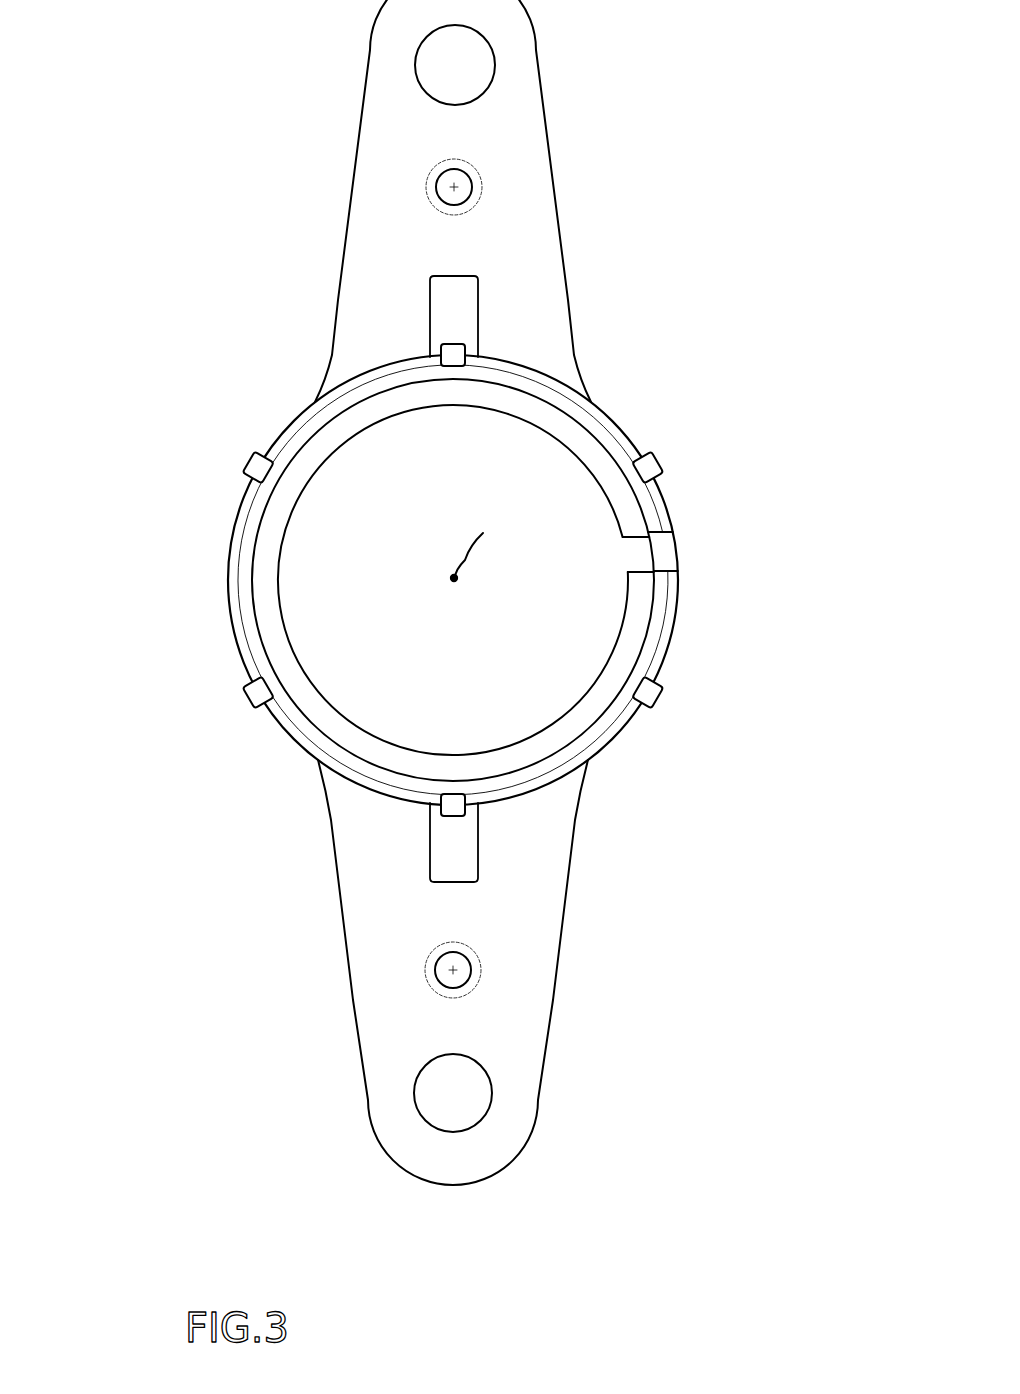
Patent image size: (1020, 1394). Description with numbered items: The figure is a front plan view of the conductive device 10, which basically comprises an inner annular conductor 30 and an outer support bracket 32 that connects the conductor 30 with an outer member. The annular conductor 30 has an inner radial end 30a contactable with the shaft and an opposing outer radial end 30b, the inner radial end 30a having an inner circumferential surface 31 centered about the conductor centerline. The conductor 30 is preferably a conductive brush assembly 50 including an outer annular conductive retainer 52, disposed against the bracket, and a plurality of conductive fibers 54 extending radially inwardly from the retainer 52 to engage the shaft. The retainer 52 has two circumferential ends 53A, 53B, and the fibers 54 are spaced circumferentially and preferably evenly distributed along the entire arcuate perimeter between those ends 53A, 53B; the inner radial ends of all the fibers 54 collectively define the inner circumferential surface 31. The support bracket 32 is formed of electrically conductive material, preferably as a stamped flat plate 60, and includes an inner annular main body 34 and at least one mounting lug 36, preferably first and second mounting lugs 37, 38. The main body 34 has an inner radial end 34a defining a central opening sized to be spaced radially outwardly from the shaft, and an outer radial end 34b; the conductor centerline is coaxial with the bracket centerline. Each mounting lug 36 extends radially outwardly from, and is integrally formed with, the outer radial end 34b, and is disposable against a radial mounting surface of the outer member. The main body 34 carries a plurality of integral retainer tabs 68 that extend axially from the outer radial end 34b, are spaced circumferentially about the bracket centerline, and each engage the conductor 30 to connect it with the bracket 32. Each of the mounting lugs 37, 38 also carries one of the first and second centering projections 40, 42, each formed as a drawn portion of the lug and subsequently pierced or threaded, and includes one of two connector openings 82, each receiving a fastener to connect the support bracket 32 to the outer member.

The conductive device 10 is at (170, 270).
The inner annular conductor 30 is at (695, 607).
The inner radial end 30a is at (288, 530).
The outer radial end 30b is at (235, 523).
The inner circumferential surface 31 is at (360, 437).
The support bracket 32 is at (597, 335).
The annular main body 34 is at (690, 553).
The inner radial end 34a is at (653, 548).
The outer radial end 34b is at (680, 546).
The mounting lug 36 is at (572, 230).
The first mounting lug 37 is at (540, 118).
The second mounting lug 38 is at (565, 920).
The first centering projection 40 is at (478, 185).
The second centering projection 42 is at (478, 972).
The conductive brush assembly 50 is at (612, 420).
The annular conductive retainer 52 is at (650, 660).
The first circumferential end 53A is at (658, 530).
The second circumferential end 53B is at (665, 578).
The conductive fibers 54 is at (462, 397).
The flat plate 60 is at (375, 252).
The retainer tabs 68 is at (255, 460).
The connector openings 82 is at (483, 62).